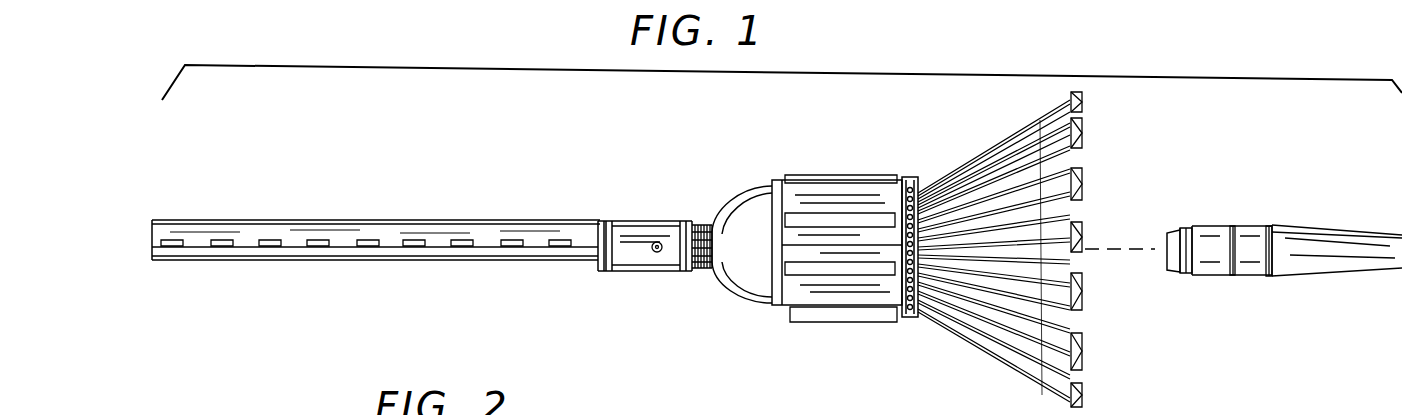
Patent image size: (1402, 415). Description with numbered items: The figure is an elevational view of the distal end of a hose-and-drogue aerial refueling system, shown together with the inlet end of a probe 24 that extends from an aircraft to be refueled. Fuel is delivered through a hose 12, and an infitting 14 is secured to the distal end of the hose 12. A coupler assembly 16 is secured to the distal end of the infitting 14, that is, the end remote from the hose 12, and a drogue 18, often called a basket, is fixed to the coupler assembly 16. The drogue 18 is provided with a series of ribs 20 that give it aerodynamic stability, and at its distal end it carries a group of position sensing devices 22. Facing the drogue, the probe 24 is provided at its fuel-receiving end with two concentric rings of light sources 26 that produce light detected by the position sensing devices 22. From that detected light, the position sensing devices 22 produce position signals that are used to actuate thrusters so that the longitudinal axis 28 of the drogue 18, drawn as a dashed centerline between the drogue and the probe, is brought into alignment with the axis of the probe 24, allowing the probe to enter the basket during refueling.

The hose 12 is at (365, 221).
The infitting 14 is at (621, 273).
The coupler assembly 16 is at (748, 210).
The drogue 18 is at (997, 355).
The ribs 20 is at (1010, 175).
The position sensing devices 22 is at (1083, 248).
The probe 24 is at (1245, 278).
The light sources 26 is at (1270, 225).
The longitudinal axis 28 is at (1122, 250).